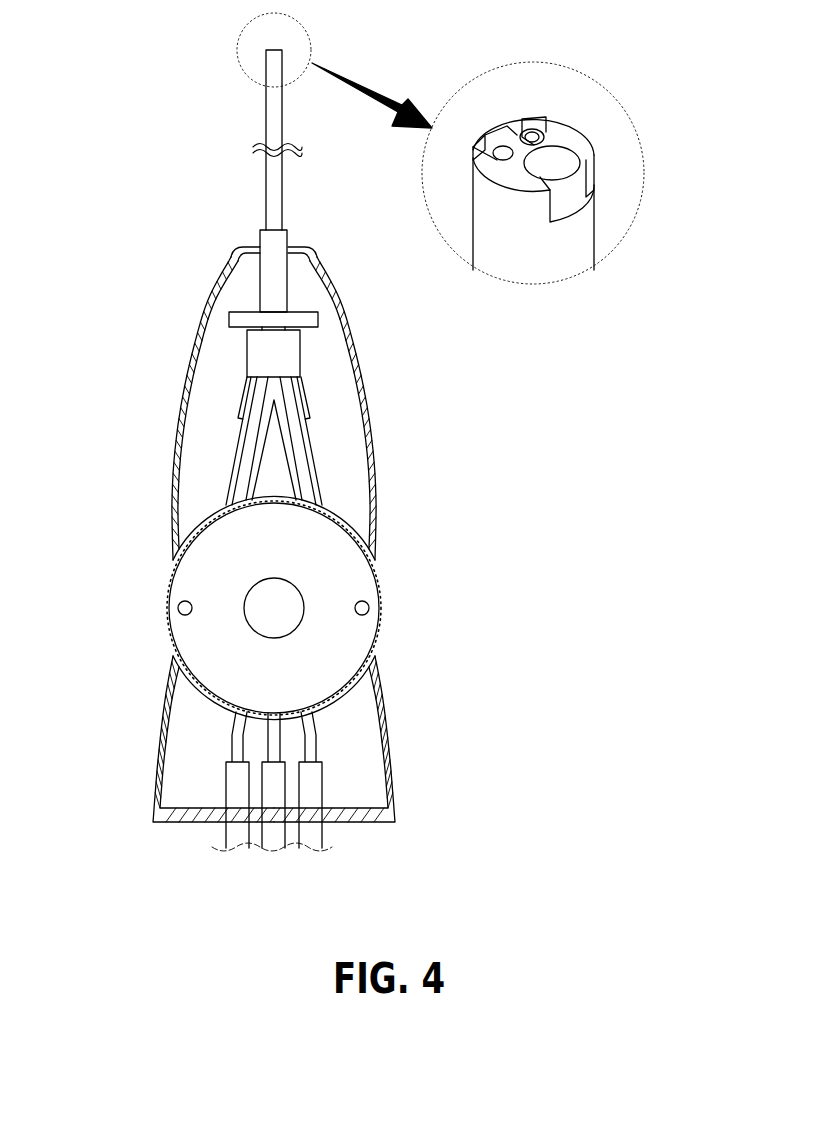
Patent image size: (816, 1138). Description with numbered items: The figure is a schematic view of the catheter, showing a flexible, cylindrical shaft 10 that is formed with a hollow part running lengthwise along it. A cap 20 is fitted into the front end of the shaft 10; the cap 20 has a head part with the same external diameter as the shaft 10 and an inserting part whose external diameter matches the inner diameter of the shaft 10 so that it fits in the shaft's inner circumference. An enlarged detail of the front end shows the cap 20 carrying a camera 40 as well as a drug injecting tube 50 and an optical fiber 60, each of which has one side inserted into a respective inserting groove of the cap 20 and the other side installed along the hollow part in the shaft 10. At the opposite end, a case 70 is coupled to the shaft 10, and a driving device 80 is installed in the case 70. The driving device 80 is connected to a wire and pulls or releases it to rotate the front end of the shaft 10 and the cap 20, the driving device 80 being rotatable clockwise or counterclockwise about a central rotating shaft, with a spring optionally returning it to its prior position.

The shaft 10 is at (183, 101).
The cap 20 is at (577, 127).
The camera 40 is at (563, 157).
The drug injecting tube 50 is at (538, 129).
The optical fiber 60 is at (502, 150).
The case 70 is at (374, 476).
The driving device 80 is at (378, 597).